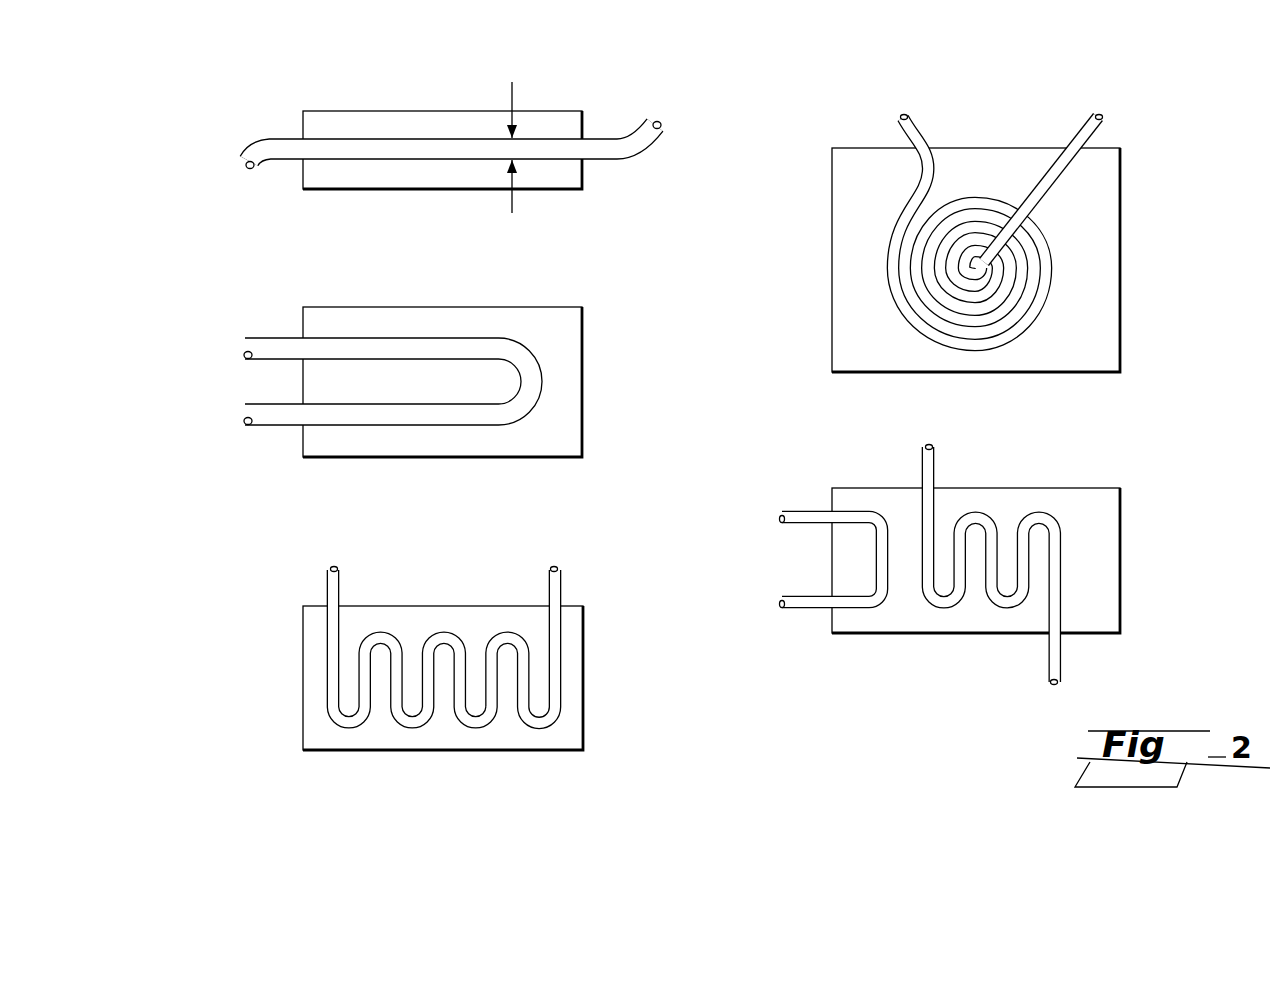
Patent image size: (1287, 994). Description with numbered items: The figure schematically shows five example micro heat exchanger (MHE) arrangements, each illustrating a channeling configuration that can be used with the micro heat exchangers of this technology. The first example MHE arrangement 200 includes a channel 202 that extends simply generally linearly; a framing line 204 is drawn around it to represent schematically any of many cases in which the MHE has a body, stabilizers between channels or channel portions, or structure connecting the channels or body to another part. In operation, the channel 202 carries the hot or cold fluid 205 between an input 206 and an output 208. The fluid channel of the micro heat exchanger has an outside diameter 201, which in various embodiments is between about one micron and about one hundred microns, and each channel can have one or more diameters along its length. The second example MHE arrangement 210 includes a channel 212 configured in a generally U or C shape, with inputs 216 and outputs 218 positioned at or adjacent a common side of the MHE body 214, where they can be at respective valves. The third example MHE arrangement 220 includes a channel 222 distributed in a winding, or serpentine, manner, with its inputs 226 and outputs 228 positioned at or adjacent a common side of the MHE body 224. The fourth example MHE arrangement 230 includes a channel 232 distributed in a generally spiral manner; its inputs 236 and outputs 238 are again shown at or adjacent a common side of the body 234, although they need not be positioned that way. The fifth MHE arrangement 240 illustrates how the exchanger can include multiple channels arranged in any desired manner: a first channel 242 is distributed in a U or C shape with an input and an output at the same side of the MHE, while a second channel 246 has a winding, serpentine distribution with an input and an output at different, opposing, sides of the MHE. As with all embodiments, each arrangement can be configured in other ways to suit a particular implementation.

The first example MHE arrangement 200 is at (456, 183).
The outside diameter 201 is at (513, 88).
The channel 202 is at (424, 135).
The framing line 204 is at (372, 190).
The fluid 205 is at (362, 150).
The input 206 is at (263, 128).
The output 208 is at (641, 167).
The second example MHE arrangement 210 is at (445, 399).
The channel 212 is at (448, 427).
The MHE body 214 is at (530, 458).
The inputs 216 is at (275, 325).
The outputs 218 is at (282, 432).
The third example MHE arrangement 220 is at (461, 654).
The channel 222 is at (388, 706).
The MHE body 224 is at (541, 750).
The inputs 226 is at (350, 590).
The outputs 228 is at (541, 592).
The fourth example MHE arrangement 230 is at (981, 236).
The channel 232 is at (888, 292).
The body 234 is at (1068, 373).
The inputs 236 is at (896, 129).
The outputs 238 is at (1067, 136).
The fifth MHE arrangement 240 is at (959, 564).
The first channel 242 is at (850, 512).
The second channel 246 is at (1036, 512).